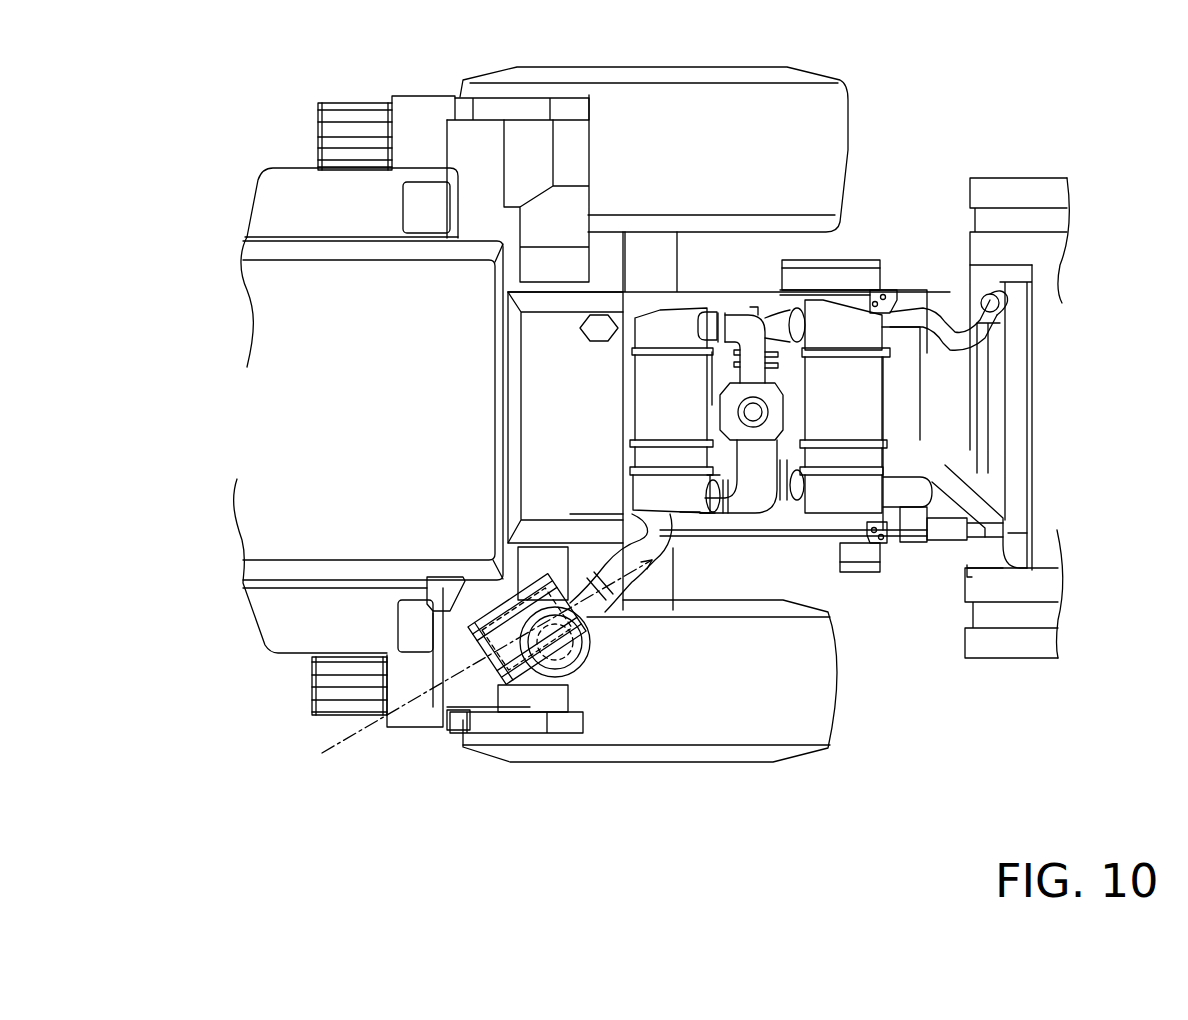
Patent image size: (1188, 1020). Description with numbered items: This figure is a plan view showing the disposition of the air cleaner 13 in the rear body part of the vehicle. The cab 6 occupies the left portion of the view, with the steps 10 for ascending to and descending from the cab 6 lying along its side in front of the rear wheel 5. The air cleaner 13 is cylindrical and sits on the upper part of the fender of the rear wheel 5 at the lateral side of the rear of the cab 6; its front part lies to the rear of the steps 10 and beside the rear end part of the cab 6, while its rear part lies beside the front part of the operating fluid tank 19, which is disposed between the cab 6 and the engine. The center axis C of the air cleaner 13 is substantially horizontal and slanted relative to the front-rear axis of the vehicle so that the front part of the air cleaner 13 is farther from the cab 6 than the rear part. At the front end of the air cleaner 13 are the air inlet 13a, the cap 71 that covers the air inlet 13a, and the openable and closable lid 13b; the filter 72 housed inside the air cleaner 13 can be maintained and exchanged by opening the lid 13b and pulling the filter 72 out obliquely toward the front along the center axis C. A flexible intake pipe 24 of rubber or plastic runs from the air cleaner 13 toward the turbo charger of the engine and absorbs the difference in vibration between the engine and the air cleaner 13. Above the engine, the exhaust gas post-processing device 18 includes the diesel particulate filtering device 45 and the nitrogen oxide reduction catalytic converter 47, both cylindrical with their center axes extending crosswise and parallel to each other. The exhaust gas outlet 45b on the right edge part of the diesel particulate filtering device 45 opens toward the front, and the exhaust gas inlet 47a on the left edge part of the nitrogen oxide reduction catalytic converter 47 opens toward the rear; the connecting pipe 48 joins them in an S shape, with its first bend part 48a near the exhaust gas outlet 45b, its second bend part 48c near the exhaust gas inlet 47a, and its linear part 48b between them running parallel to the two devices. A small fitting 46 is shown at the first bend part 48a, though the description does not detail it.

The rear wheel 5 is at (818, 732).
The cab 6 is at (300, 306).
The steps 10 is at (313, 682).
The air cleaner 13 is at (515, 672).
The air inlet 13a is at (572, 675).
The lid 13b is at (460, 663).
The exhaust gas post-processing device 18 is at (845, 368).
The operating fluid tank 19 is at (598, 312).
The intake pipe 24 is at (627, 590).
The diesel particulate filtering device 45 is at (900, 300).
The exhaust gas outlet 45b is at (805, 300).
The pipe connector 46 is at (753, 307).
The nitrogen oxide reduction catalytic converter 47 is at (568, 378).
The exhaust gas inlet 47a is at (720, 513).
The connecting pipe 48 is at (723, 447).
The first bend part 48a is at (763, 327).
The linear part 48b is at (840, 417).
The second bend part 48c is at (840, 500).
The cap 71 is at (573, 650).
The filter 72 is at (472, 735).
The center axis C is at (332, 755).